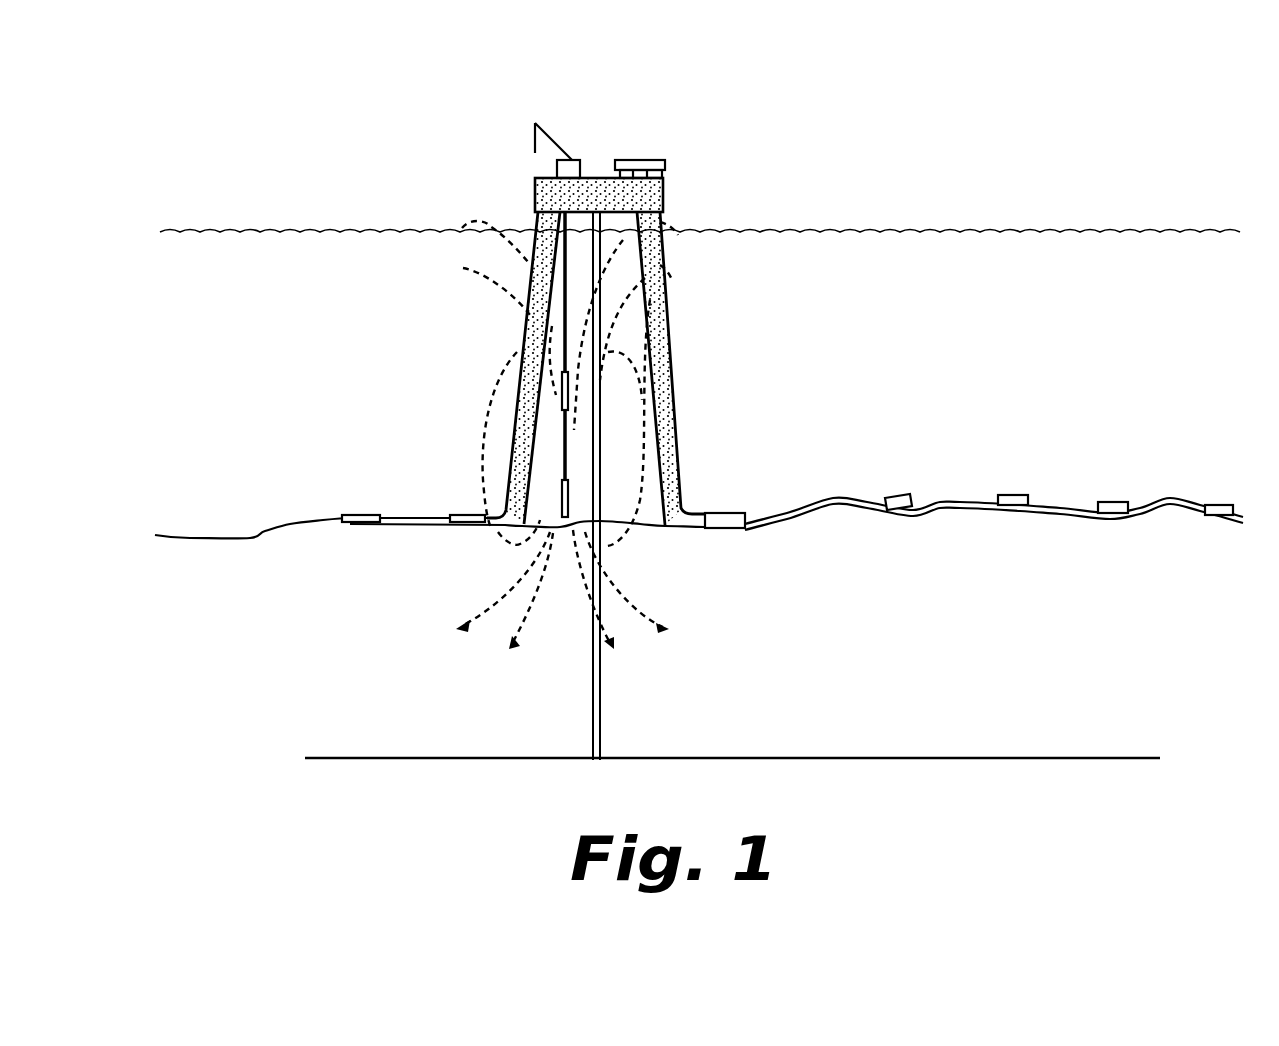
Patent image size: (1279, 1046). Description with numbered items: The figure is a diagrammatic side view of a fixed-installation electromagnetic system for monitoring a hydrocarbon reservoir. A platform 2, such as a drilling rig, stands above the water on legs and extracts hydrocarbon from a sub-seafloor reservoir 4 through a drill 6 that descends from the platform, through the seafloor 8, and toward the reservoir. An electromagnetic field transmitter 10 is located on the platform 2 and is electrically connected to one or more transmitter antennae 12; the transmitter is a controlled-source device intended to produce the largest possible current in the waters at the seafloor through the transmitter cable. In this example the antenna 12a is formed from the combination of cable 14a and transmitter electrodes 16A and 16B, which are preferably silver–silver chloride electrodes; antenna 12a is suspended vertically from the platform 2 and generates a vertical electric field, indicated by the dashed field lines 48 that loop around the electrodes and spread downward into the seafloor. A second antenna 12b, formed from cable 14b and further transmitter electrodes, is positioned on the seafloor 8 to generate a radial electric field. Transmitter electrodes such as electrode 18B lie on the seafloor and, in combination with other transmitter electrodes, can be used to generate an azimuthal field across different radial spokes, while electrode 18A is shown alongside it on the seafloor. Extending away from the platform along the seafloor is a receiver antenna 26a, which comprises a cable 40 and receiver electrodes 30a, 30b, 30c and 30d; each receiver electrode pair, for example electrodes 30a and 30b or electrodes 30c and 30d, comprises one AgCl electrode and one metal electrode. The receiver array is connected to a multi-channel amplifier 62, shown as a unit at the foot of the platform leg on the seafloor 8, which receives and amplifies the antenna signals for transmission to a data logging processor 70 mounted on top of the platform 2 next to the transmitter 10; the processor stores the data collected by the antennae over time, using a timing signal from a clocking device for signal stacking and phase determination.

The platform 2 is at (665, 183).
The sub-seafloor reservoir 4 is at (803, 758).
The drill 6 is at (598, 667).
The seafloor 8 is at (222, 537).
The electromagnetic field transmitter 10 is at (570, 160).
The transmitter antennae 12 is at (565, 300).
The antenna 12a is at (567, 295).
The antenna 12b is at (570, 226).
The cable 14a is at (567, 434).
The cable 14b is at (518, 347).
The transmitter electrode 16A is at (576, 402).
The transmitter electrode 16B is at (576, 482).
The seafloor receiver 18A is at (472, 515).
The transmitter electrode 18B is at (370, 515).
The receiver antenna 26a is at (1036, 439).
The receiver electrode 30a is at (900, 495).
The receiver electrode 30b is at (1015, 495).
The receiver electrode 30c is at (1120, 502).
The receiver electrode 30d is at (1199, 476).
The cable 40 is at (690, 420).
The field lines 48 is at (483, 421).
The multi-channel amplifier 62 is at (722, 528).
The data logging processor 70 is at (638, 160).